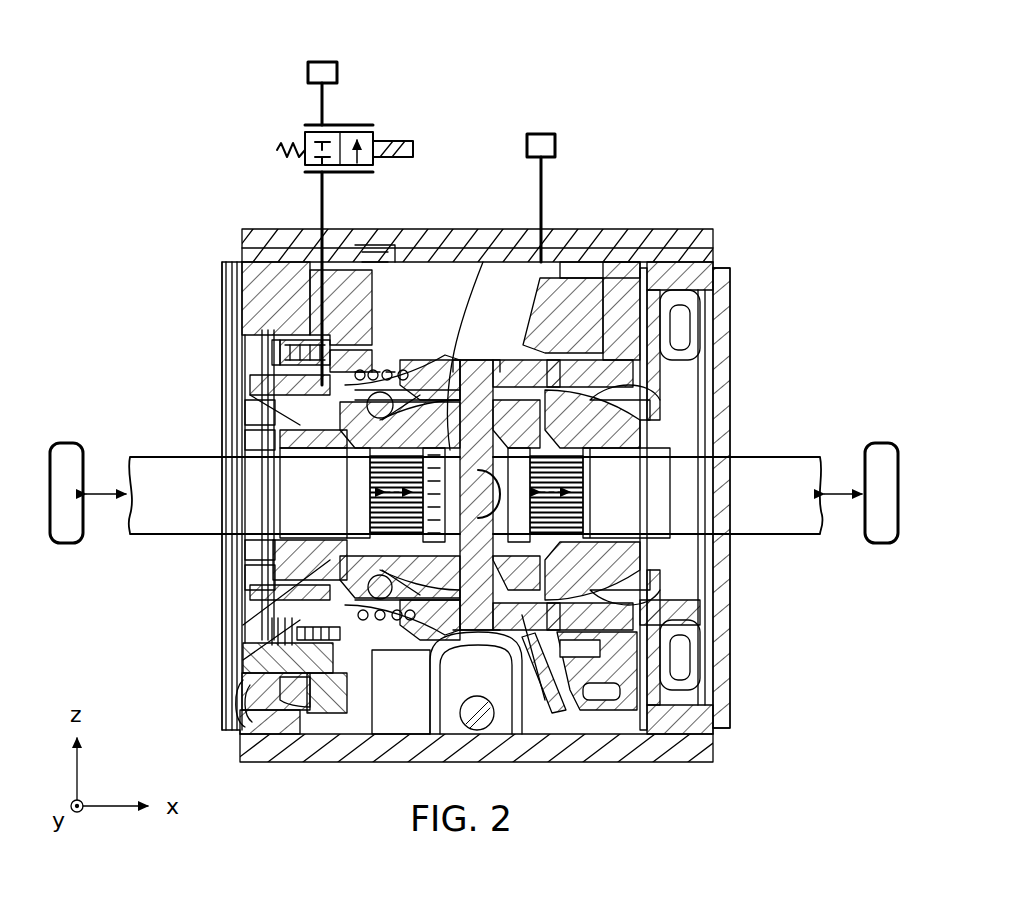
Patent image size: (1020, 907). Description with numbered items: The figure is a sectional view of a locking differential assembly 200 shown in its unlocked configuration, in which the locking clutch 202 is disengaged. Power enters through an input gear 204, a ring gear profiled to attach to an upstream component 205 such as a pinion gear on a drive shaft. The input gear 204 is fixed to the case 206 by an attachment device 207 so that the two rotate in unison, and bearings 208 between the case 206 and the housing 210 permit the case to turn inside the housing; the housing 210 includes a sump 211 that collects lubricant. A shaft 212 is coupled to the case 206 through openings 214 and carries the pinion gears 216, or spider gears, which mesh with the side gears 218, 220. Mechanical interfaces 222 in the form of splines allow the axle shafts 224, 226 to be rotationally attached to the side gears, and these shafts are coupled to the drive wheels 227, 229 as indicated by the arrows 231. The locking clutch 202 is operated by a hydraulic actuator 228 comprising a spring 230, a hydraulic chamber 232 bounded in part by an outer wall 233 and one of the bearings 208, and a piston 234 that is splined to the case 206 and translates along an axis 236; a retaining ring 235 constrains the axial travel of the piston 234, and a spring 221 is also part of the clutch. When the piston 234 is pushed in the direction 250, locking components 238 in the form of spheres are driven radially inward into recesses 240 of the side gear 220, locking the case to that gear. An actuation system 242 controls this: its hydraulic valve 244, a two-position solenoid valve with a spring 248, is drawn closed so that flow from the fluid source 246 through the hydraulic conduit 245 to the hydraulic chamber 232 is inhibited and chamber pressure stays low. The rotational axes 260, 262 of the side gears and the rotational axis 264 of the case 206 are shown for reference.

The locking differential assembly 200 is at (808, 205).
The locking clutch 202 is at (388, 372).
The input gear 204 is at (585, 300).
The upstream component 205 is at (558, 142).
The case 206 is at (700, 300).
The attachment device 207 is at (640, 335).
The bearings 208 is at (283, 402).
The housing 210 is at (255, 245).
The sump 211 is at (405, 714).
The shaft 212 is at (475, 360).
The openings 214 is at (466, 358).
The pinion gears 216 is at (660, 446).
The side gear 218 is at (655, 562).
The side gear 220 is at (245, 632).
The spring 221 is at (300, 338).
The mechanical interfaces 222 is at (245, 592).
The axle shaft 224 is at (795, 538).
The axle shaft 226 is at (140, 538).
The drive wheel 227 is at (890, 441).
The hydraulic actuator 228 is at (275, 345).
The drive wheel 229 is at (66, 441).
The spring 230 is at (382, 368).
The arrows 231 is at (106, 500).
The hydraulic chamber 232 is at (300, 382).
The outer wall 233 is at (372, 330).
The piston 234 is at (290, 440).
The retaining ring 235 is at (240, 676).
The axis 236 is at (272, 478).
The locking components 238 is at (458, 352).
The recesses 240 is at (357, 470).
The actuation system 242 is at (237, 78).
The hydraulic valve 244 is at (425, 92).
The hydraulic conduit 245 is at (320, 205).
The fluid source 246 is at (340, 72).
The spring 248 is at (275, 150).
The direction 250 is at (385, 385).
The rotational axis 260 is at (580, 482).
The rotational axis 262 is at (412, 598).
The rotational axis 264 is at (510, 600).